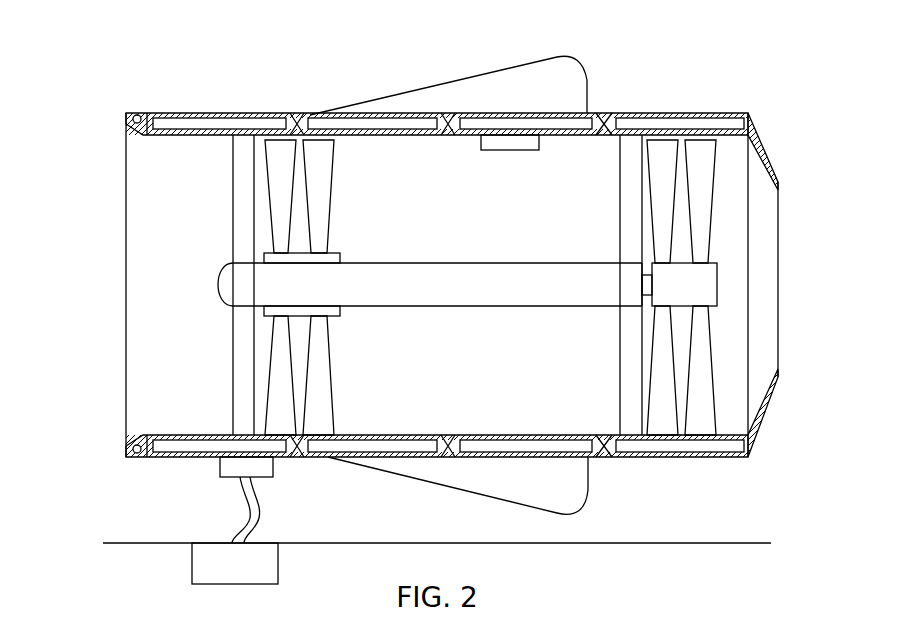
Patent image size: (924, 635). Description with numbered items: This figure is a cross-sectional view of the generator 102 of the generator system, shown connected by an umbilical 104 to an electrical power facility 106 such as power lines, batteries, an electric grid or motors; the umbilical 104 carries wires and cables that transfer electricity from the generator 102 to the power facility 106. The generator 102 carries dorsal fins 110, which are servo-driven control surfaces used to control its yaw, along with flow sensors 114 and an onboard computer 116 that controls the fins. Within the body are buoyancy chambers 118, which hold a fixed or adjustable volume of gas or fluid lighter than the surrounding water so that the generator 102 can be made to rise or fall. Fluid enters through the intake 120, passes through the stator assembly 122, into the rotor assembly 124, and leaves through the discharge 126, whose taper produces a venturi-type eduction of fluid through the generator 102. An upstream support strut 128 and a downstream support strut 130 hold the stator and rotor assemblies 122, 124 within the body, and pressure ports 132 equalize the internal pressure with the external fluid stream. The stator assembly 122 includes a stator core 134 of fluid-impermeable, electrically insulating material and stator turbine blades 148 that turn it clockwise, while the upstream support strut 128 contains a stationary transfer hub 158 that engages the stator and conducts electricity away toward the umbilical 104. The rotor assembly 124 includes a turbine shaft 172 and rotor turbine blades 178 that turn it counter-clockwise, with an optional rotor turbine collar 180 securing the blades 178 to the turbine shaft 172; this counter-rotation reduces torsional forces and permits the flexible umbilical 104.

The generator 102 is at (786, 132).
The umbilical 104 is at (258, 510).
The electrical power facility 106 is at (263, 557).
The dorsal fins 110 is at (557, 55).
The flow sensors 114 is at (135, 112).
The onboard computer 116 is at (500, 130).
The buoyancy chambers 118 is at (235, 115).
The intake 120 is at (126, 202).
The stator assembly 122 is at (233, 305).
The rotor assembly 124 is at (645, 292).
The discharge 126 is at (767, 153).
The upstream support strut 128 is at (238, 233).
The downstream support strut 130 is at (626, 148).
The pressure ports 132 is at (456, 457).
The stator core 134 is at (538, 295).
The stator turbine blades 148 is at (285, 153).
The transfer hub 158 is at (265, 291).
The turbine shaft 172 is at (655, 283).
The rotor turbine blades 178 is at (668, 142).
The rotor turbine collar 180 is at (707, 274).